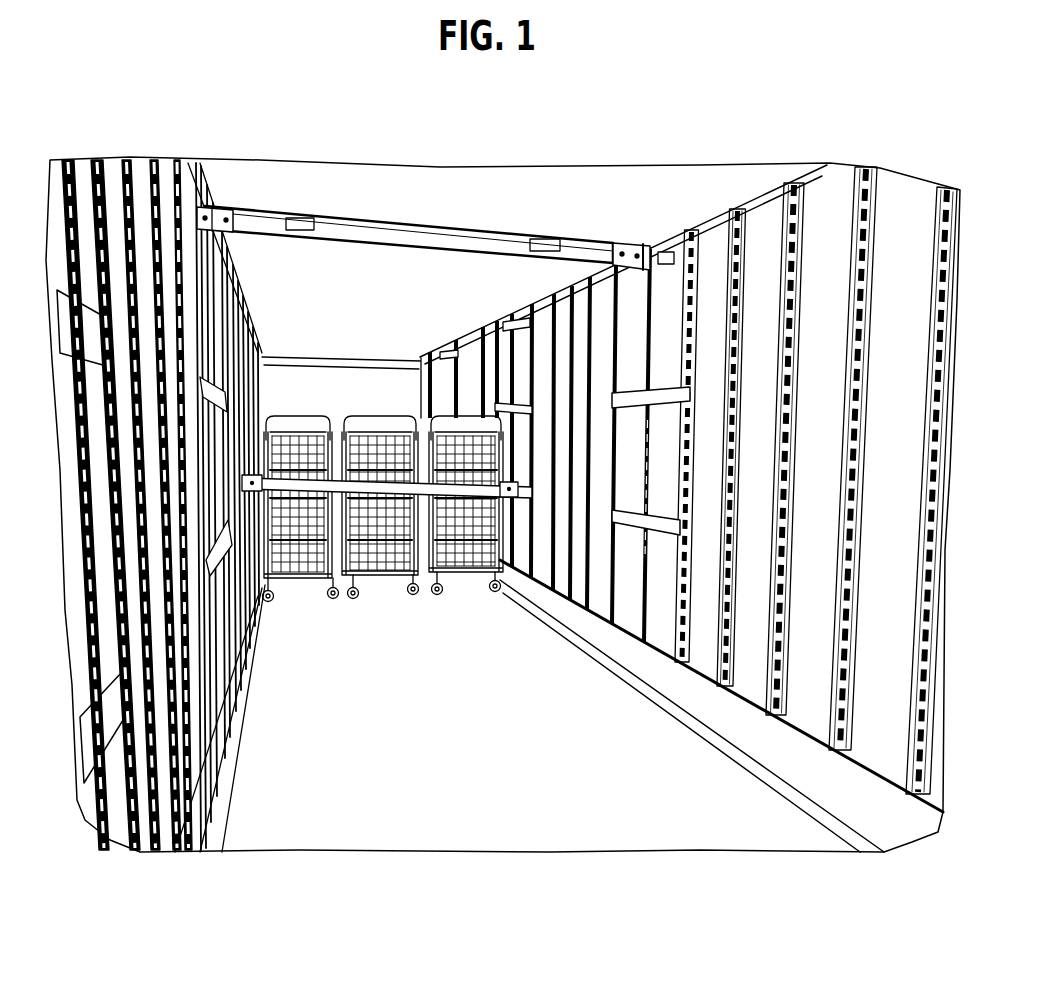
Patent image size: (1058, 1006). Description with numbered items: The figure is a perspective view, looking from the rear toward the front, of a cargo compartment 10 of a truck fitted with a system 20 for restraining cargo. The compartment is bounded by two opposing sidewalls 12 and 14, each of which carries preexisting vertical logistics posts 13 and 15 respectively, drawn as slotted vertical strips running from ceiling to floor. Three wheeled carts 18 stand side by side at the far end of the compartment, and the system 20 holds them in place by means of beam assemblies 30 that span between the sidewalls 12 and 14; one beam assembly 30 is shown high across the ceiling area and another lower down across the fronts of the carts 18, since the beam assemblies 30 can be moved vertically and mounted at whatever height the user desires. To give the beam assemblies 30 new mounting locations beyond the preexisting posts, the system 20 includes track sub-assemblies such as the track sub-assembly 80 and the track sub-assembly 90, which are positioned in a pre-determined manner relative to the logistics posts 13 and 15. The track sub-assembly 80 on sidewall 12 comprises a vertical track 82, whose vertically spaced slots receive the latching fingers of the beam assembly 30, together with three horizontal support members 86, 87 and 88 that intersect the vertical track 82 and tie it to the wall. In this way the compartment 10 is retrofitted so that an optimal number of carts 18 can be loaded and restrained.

The cargo compartment 10 is at (450, 193).
The sidewall 12 is at (908, 189).
The vertical logistics post 13 is at (865, 222).
The sidewall 14 is at (110, 190).
The vertical logistics post 15 is at (70, 216).
The cart 18 is at (289, 426).
The system 20 is at (647, 241).
The beam assembly 30 is at (338, 227).
The track sub-assembly 80 is at (662, 373).
The vertical track 82 is at (654, 452).
The horizontal support member 86 is at (667, 264).
The horizontal support member 87 is at (661, 408).
The horizontal support member 88 is at (665, 535).
The track sub-assembly 90 is at (517, 398).